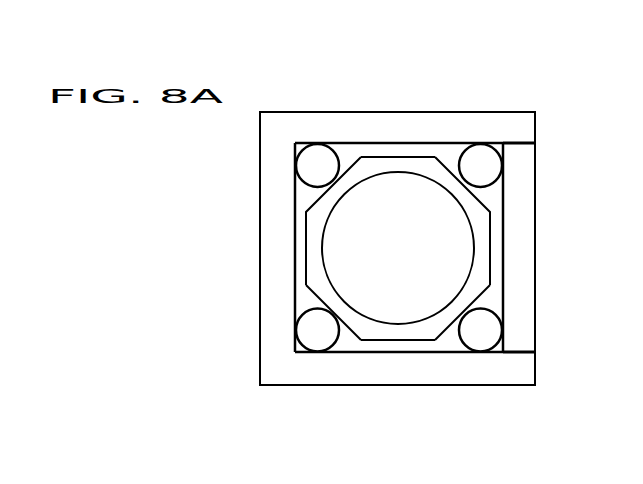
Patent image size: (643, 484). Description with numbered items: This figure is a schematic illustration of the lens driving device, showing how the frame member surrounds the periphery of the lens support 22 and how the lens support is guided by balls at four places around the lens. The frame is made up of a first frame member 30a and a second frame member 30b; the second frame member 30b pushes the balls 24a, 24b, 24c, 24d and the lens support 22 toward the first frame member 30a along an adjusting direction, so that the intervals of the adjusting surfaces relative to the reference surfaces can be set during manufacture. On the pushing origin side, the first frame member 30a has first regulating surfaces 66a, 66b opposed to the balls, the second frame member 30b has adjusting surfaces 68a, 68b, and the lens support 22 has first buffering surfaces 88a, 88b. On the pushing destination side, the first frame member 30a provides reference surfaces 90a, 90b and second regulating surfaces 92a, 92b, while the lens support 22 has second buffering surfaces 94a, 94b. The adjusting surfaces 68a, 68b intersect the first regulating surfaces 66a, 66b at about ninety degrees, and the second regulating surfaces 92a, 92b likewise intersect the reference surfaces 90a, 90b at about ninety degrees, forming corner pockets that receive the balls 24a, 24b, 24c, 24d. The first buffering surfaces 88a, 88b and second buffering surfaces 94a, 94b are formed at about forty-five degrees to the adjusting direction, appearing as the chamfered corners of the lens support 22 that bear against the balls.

The lens support 22 is at (396, 173).
The ball 24a is at (313, 162).
The ball 24b is at (477, 158).
The ball 24c is at (465, 337).
The ball 24d is at (312, 338).
The first frame member 30a is at (277, 372).
The second frame member 30b is at (525, 165).
The first regulating surface 66a is at (447, 143).
The first regulating surface 66b is at (497, 354).
The adjusting surface 68a is at (505, 180).
The adjusting surface 68b is at (503, 338).
The first buffering surface 88a is at (466, 187).
The first buffering surface 88b is at (453, 322).
The reference surface 90a is at (297, 157).
The reference surface 90b is at (295, 312).
The second regulating surface 92a is at (330, 142).
The second regulating surface 92b is at (340, 354).
The second buffering surface 94a is at (322, 195).
The second buffering surface 94b is at (338, 318).